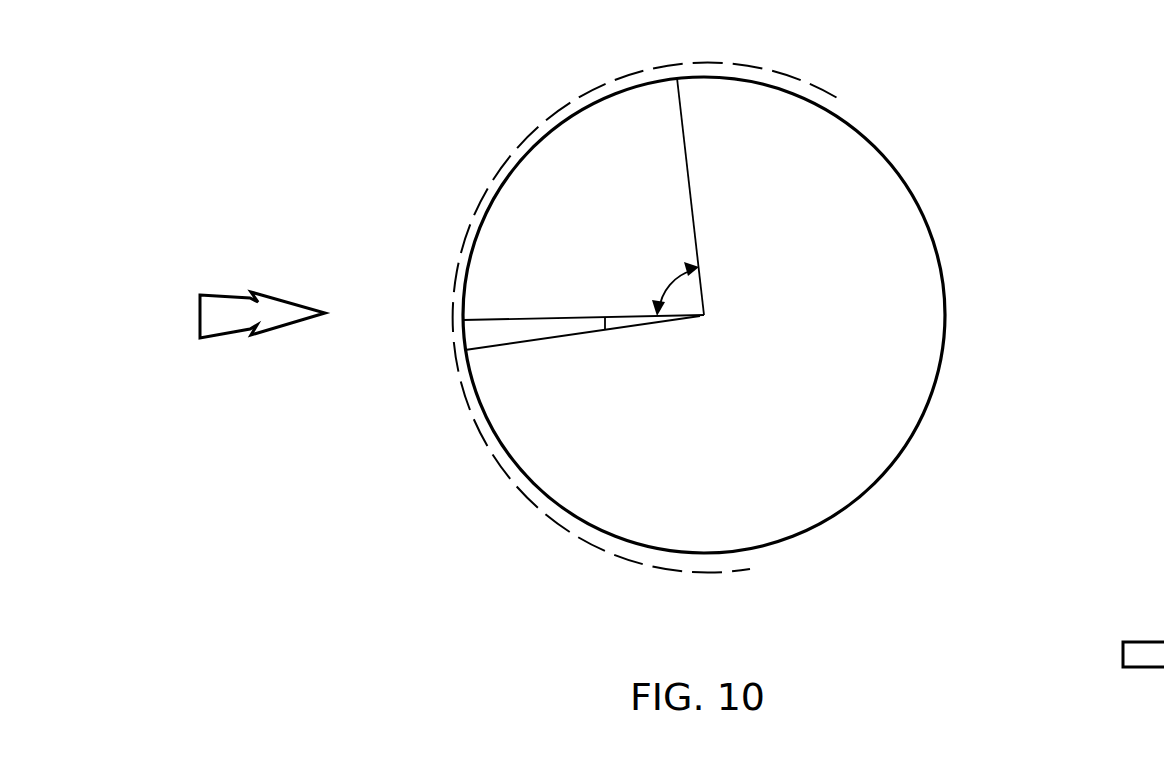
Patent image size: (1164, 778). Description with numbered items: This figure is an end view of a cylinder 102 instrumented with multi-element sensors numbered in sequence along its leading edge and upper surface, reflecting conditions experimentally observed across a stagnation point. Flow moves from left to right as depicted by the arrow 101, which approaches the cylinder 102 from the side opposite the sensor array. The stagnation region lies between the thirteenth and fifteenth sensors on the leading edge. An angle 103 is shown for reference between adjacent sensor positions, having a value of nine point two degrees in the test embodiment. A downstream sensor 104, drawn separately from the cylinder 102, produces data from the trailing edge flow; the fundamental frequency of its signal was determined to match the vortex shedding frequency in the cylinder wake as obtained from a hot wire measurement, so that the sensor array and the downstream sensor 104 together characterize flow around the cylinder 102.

The arrow 101 is at (246, 366).
The cylinder 102 is at (732, 302).
The angle 103 is at (583, 465).
The downstream sensor 104 is at (1122, 655).